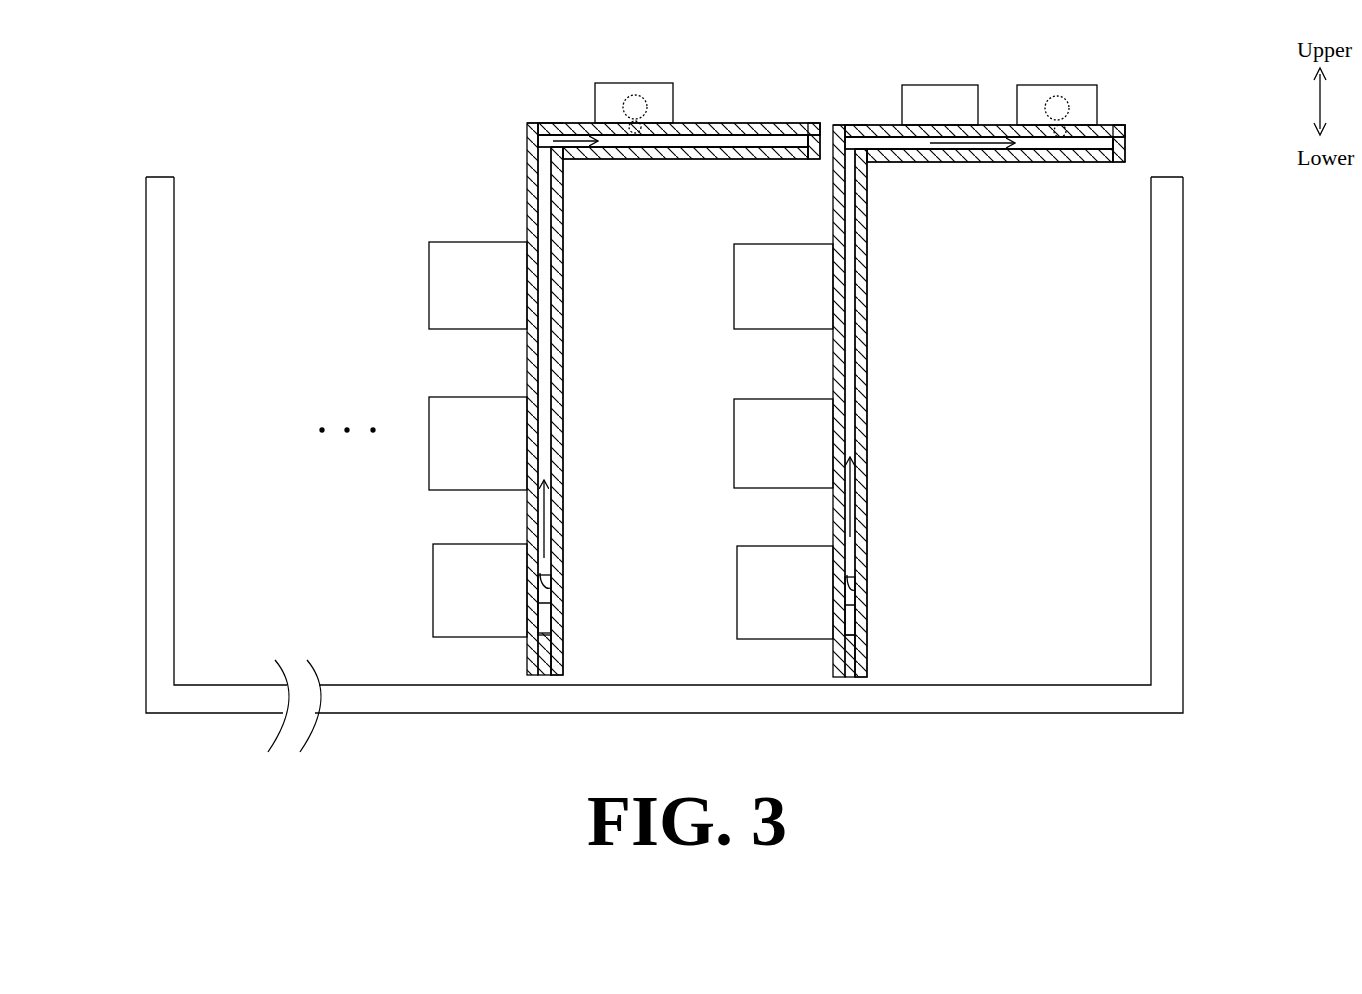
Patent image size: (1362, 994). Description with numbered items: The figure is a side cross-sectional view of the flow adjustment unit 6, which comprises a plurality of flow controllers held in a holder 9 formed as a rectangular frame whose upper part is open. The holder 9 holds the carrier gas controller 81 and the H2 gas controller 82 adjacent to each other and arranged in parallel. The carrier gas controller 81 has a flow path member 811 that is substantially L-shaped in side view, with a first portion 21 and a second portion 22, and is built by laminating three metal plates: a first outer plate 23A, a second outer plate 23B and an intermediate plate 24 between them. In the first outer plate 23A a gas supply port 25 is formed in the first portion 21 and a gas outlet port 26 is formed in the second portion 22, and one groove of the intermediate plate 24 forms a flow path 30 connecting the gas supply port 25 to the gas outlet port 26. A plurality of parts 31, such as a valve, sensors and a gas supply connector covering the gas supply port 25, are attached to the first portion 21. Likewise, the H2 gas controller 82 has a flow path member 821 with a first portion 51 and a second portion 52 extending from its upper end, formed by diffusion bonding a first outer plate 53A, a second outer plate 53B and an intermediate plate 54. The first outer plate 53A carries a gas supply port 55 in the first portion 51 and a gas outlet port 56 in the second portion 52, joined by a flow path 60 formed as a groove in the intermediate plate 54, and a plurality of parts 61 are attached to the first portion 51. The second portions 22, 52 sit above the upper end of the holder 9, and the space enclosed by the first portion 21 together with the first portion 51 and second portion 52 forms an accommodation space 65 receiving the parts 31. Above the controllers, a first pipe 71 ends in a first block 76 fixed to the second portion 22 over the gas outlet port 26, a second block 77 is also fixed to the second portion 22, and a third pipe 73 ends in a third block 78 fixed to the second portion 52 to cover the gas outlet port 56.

The flow adjustment unit 6 is at (1212, 355).
The holder 9 is at (1182, 533).
The flow path 60 is at (543, 378).
The parts 61 is at (463, 329).
The accommodation space 65 is at (638, 355).
The first portion 51 is at (562, 485).
The second portion 52 is at (683, 160).
The first outer plate 53A is at (773, 98).
The second outer plate 53B is at (813, 153).
The intermediate plate 54 is at (787, 138).
The gas supply port 55 is at (548, 582).
The gas outlet port 56 is at (630, 127).
The flow path 30 is at (851, 368).
The parts 31 is at (767, 329).
The first portion 21 is at (869, 488).
The second portion 22 is at (962, 165).
The first outer plate 23A is at (1120, 130).
The second outer plate 23B is at (1117, 160).
The intermediate plate 24 is at (1120, 152).
The gas supply port 25 is at (838, 585).
The gas outlet port 26 is at (1058, 135).
The H2 gas controller 82 is at (661, 72).
The flow path member 821 is at (558, 122).
The third block 78 is at (643, 83).
The third pipe 73 is at (628, 93).
The carrier gas controller 81 is at (1040, 74).
The flow path member 811 is at (995, 124).
The second block 77 is at (930, 85).
The first block 76 is at (1087, 85).
The first pipe 71 is at (1056, 96).